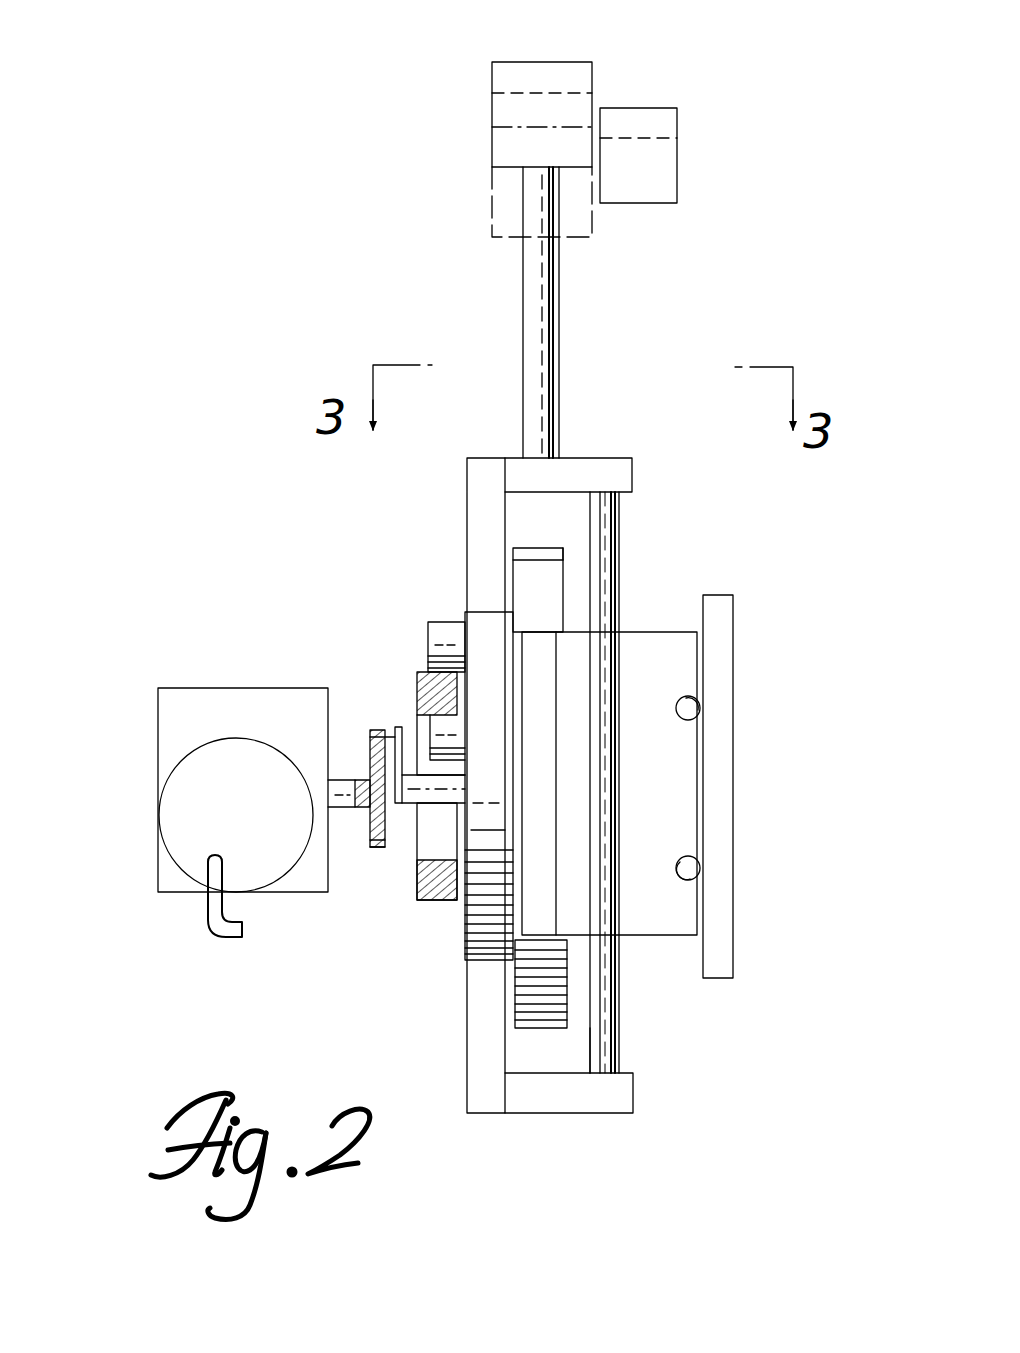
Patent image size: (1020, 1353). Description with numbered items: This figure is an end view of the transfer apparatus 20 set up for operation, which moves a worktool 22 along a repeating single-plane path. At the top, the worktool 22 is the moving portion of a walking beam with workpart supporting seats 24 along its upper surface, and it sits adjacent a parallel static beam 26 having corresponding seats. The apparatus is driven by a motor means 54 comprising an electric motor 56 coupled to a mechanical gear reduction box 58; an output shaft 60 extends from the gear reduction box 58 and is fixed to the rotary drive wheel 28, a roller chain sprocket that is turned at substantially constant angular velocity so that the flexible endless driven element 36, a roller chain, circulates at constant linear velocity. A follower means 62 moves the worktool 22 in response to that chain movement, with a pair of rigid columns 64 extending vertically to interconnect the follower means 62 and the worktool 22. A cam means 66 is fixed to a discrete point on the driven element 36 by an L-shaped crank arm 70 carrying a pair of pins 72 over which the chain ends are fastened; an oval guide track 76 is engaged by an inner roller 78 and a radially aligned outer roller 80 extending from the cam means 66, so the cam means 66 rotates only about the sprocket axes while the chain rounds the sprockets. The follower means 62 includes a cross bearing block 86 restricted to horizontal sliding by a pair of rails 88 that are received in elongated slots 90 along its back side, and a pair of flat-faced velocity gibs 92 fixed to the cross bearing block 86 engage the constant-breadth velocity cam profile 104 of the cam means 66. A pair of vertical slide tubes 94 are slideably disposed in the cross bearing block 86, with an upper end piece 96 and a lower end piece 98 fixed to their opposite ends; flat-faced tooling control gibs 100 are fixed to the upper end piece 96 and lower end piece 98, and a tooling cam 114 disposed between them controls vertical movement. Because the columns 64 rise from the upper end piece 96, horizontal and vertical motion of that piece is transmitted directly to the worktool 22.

The transfer apparatus 20 is at (254, 518).
The worktool 22 is at (507, 62).
The workpart supporting seats 24 is at (497, 93).
The static beam 26 is at (655, 108).
The rotary drive wheel 28 is at (375, 852).
The flexible endless driven element 36 is at (396, 852).
The motor means 54 is at (154, 686).
The electric motor 56 is at (165, 850).
The mechanical gear reduction box 58 is at (241, 688).
The output shaft 60 is at (340, 790).
The follower means 62 is at (636, 455).
The rigid columns 64 is at (530, 330).
The cam means 66 is at (568, 546).
The L-shaped crank arm 70 is at (442, 795).
The pins 72 is at (380, 730).
The oval guide track 76 is at (430, 902).
The inner roller 78 is at (450, 745).
The outer roller 80 is at (435, 625).
The cross bearing block 86 is at (655, 632).
The rails 88 is at (700, 712).
The elongated slots 90 is at (690, 708).
The velocity gibs 92 is at (540, 632).
The slide tubes 94 is at (612, 1050).
The upper end piece 96 is at (580, 460).
The lower end piece 98 is at (585, 1113).
The tooling control gibs 100 is at (480, 490).
The velocity cam profile 104 is at (556, 525).
The tooling cam 114 is at (490, 612).